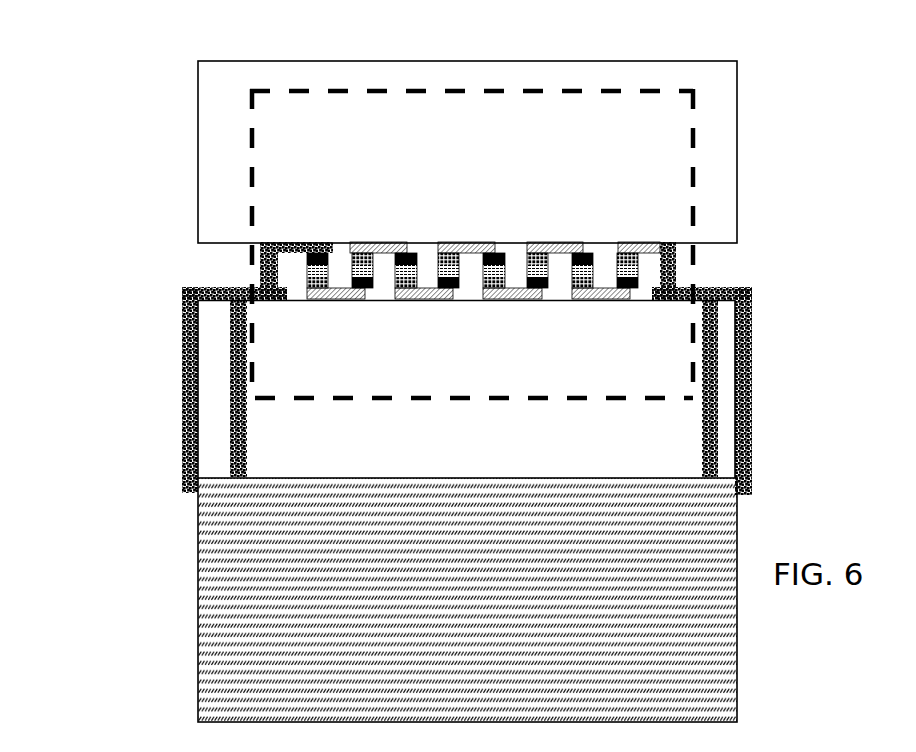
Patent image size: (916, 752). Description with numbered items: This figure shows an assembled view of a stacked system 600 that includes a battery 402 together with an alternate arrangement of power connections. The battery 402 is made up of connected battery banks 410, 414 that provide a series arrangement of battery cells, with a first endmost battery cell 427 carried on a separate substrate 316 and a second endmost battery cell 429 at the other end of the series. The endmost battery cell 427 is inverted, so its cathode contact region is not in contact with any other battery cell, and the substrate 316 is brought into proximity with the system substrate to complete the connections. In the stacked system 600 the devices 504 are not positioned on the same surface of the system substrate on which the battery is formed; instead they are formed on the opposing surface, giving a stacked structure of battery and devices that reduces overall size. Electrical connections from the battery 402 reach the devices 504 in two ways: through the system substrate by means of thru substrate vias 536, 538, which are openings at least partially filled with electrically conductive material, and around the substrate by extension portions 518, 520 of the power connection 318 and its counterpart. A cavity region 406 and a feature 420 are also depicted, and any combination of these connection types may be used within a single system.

The stacked system 600 is at (847, 652).
The substrate 316 is at (467, 152).
The battery 402 is at (230, 158).
The power connection 318 is at (198, 268).
The battery bank 414 is at (678, 227).
The first endmost battery cell 427 is at (630, 223).
The battery bank 410 is at (638, 307).
The second endmost battery cell 429 is at (335, 315).
The extension portion 518 is at (165, 360).
The seal ring 420 is at (718, 269).
The extension portion 520 is at (770, 355).
The thru substrate via 538 is at (215, 447).
The thru substrate via 536 is at (730, 450).
The cavity 406 is at (474, 389).
The devices 504 is at (159, 616).